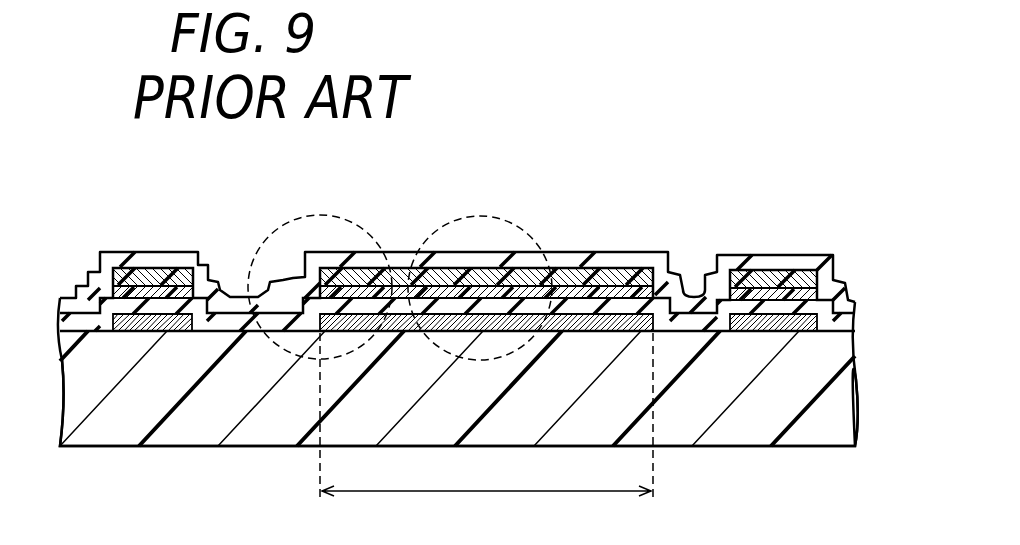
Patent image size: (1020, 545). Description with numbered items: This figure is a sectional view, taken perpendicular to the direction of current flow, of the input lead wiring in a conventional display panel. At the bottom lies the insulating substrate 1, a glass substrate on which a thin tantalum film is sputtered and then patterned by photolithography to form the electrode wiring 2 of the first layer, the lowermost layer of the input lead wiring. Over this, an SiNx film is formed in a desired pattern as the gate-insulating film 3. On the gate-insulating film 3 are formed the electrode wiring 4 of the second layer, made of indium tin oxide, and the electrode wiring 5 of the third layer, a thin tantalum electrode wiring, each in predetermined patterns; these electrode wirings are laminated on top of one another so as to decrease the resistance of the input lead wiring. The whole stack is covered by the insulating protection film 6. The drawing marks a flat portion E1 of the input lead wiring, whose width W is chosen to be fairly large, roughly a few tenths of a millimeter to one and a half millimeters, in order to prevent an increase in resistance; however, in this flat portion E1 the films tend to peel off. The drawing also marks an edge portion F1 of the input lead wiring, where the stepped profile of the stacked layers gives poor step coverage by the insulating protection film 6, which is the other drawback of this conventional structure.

The insulating substrate 1 is at (92, 425).
The electrode wiring of a first layer 2 is at (623, 333).
The gate-insulating film 3 is at (210, 333).
The electrode wiring of a second layer 4 is at (632, 288).
The electrode wiring of a third layer 5 is at (595, 272).
The insulating protection film 6 is at (151, 255).
The edge portion F1 is at (336, 216).
The flat portion E1 is at (503, 218).
The width W is at (486, 419).